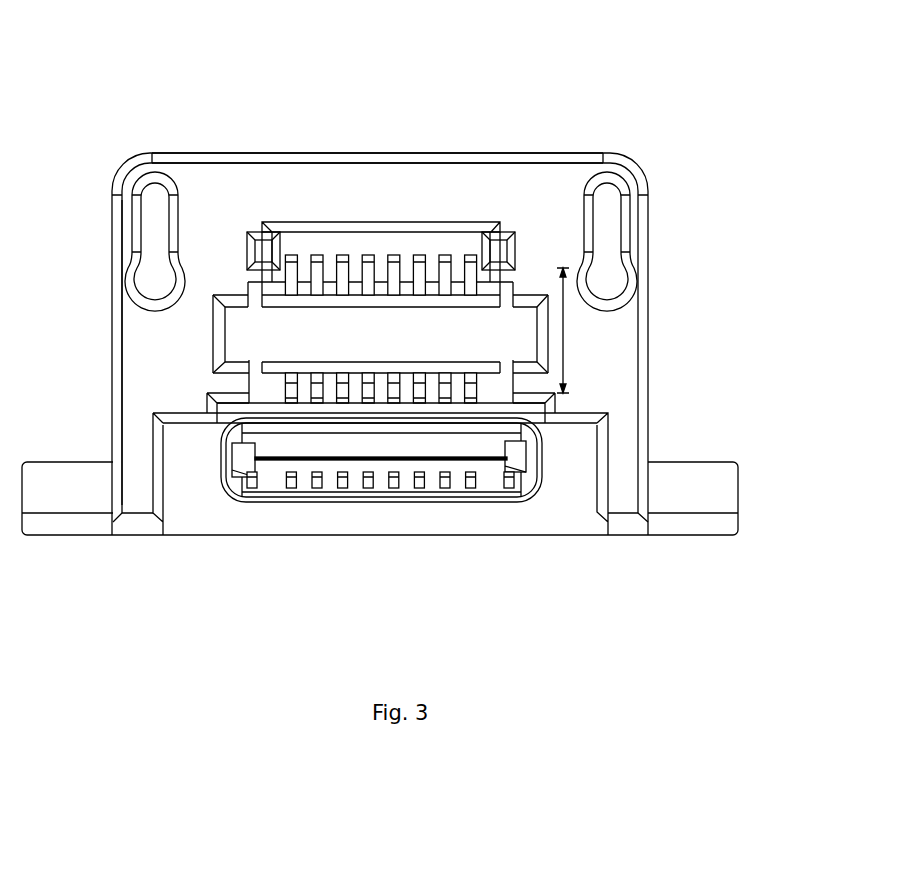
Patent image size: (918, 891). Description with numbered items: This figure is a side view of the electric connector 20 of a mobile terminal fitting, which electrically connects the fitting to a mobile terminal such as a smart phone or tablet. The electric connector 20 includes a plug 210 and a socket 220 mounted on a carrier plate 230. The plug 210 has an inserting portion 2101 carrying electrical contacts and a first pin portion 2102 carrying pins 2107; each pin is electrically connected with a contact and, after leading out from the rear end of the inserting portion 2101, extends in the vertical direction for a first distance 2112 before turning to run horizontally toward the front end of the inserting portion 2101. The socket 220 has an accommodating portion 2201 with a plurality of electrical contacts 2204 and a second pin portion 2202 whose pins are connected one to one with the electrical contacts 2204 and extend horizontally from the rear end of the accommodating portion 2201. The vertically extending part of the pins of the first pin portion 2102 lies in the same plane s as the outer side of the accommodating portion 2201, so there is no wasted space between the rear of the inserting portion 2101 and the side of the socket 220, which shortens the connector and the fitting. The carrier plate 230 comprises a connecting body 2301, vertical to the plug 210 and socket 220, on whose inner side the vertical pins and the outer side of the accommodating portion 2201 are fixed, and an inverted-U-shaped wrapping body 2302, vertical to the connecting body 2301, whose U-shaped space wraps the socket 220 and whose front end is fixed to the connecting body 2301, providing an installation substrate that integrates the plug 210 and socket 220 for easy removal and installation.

The electric connector 20 is at (62, 51).
The plug 210 is at (410, 225).
The inserting portion 2101 is at (272, 228).
The first pin portion 2102 is at (368, 248).
The pins 2107 is at (443, 255).
The first distance 2112 is at (564, 268).
The socket 220 is at (183, 493).
The accommodating portion 2201 is at (486, 468).
The second pin portion 2202 is at (338, 498).
The electrical contacts 2204 is at (443, 490).
The carrier plate 230 is at (651, 378).
The connecting body 2301 is at (578, 153).
The wrapping body 2302 is at (662, 462).
The plane s is at (152, 343).